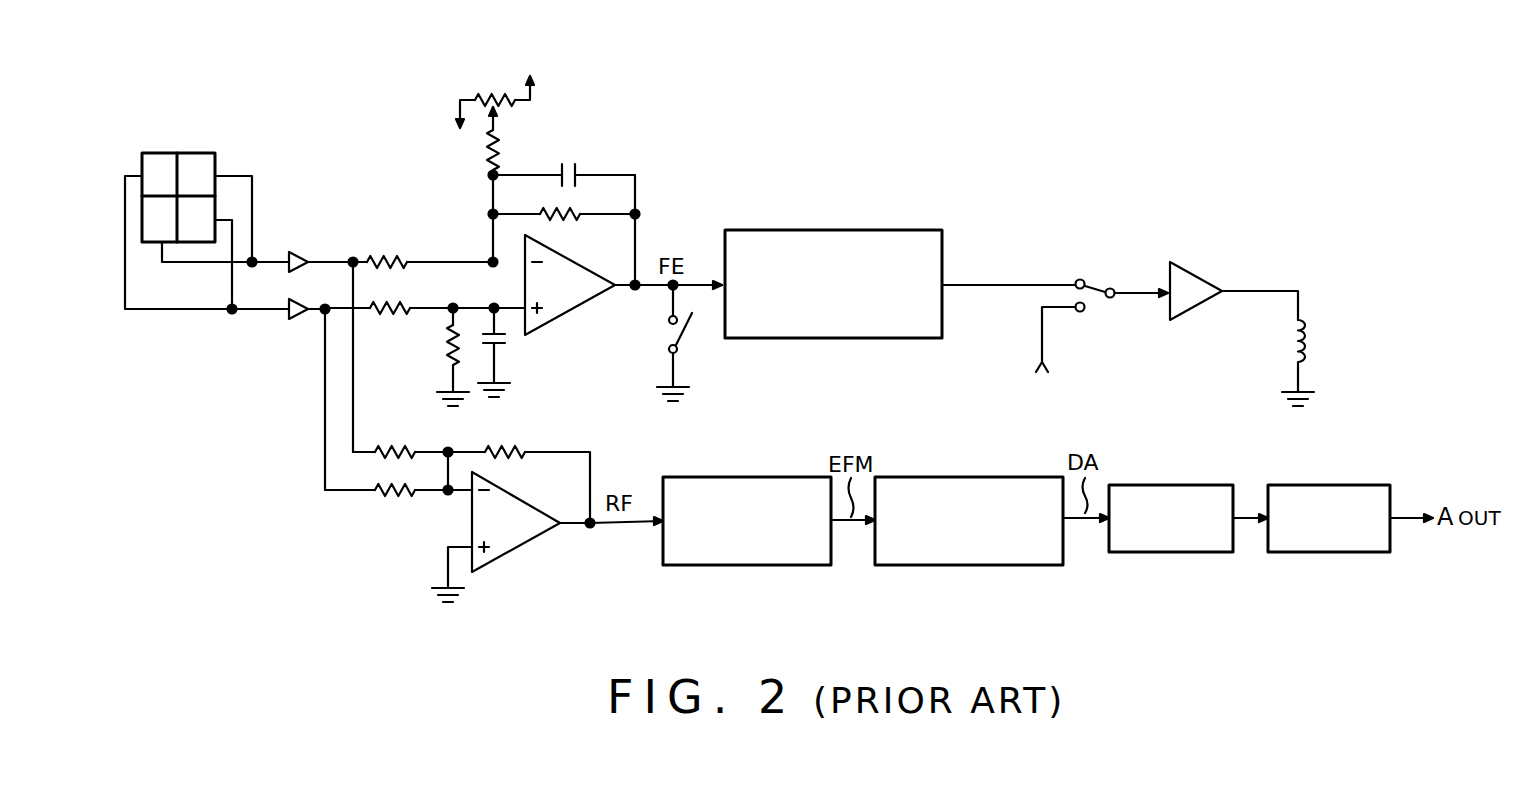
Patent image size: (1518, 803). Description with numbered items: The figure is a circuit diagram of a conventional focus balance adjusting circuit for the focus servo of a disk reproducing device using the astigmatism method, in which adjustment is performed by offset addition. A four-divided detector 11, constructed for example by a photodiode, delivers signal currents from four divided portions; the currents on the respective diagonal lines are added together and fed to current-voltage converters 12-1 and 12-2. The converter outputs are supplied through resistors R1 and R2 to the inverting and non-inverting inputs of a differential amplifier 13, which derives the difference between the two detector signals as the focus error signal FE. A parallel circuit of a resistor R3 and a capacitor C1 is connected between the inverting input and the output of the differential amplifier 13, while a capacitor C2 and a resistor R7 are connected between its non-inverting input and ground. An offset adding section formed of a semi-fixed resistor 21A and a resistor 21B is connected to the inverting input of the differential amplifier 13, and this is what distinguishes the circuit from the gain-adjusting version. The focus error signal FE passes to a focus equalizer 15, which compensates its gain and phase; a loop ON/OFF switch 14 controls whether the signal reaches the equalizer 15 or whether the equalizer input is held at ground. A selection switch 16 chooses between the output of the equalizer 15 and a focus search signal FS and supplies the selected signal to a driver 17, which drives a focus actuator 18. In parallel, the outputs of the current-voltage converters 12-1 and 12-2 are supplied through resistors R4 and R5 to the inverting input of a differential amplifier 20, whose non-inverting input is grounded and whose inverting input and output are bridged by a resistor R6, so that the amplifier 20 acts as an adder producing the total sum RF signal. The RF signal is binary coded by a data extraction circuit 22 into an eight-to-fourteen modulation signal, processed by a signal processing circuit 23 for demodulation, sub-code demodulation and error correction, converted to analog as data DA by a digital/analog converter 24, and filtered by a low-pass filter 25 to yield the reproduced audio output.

The four-divided detector 11 is at (215, 153).
The current-voltage converter 12-1 is at (297, 250).
The current-voltage converter 12-2 is at (297, 320).
The differential amplifier 13 is at (583, 305).
The loop ON/OFF switch 14 is at (667, 330).
The focus equalizer 15 is at (770, 229).
The selection switch 16 is at (1099, 280).
The driver 17 is at (1193, 272).
The focus actuator 18 is at (1306, 357).
The differential amplifier 20 is at (535, 545).
The semi-fixed resistor 21A is at (482, 94).
The resistor 21B is at (507, 150).
The data extraction circuit 22 is at (726, 477).
The signal processing circuit 23 is at (954, 477).
The digital/analog converter 24 is at (1148, 485).
The low-pass filter 25 is at (1288, 485).
The resistor R1 is at (388, 248).
The resistor R2 is at (394, 302).
The resistor R3 is at (566, 222).
The resistor R4 is at (400, 430).
The resistor R5 is at (395, 498).
The resistor R6 is at (520, 430).
The resistor R7 is at (440, 348).
The capacitor C1 is at (575, 165).
The capacitor C2 is at (510, 337).